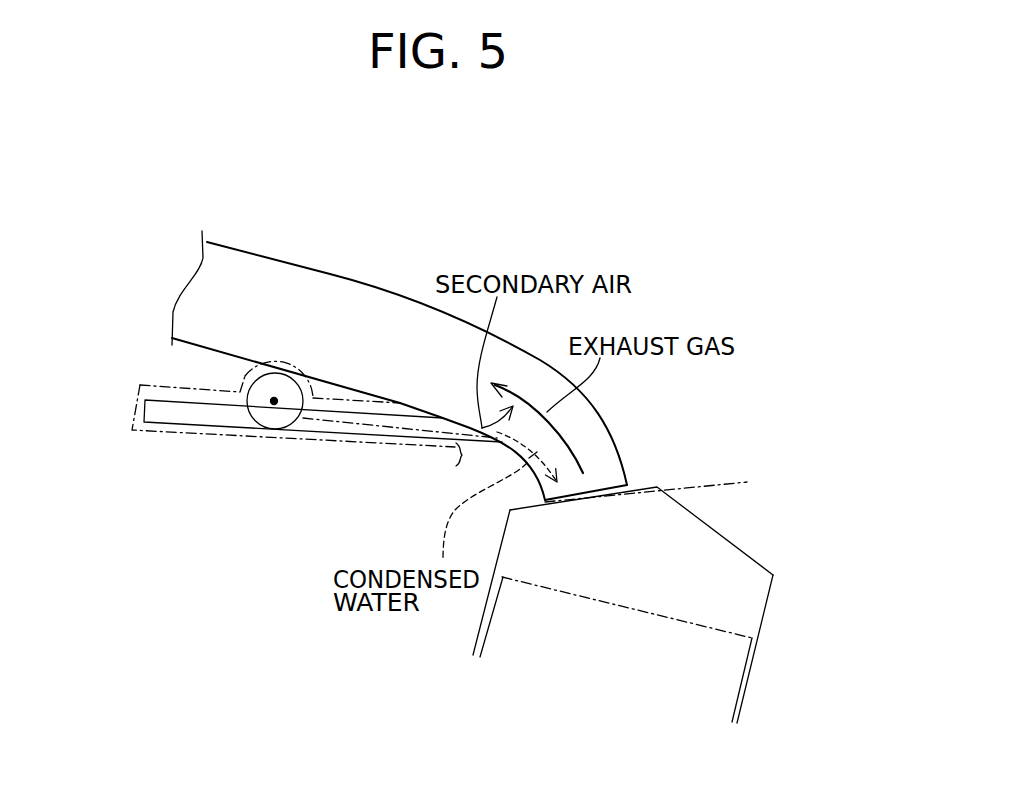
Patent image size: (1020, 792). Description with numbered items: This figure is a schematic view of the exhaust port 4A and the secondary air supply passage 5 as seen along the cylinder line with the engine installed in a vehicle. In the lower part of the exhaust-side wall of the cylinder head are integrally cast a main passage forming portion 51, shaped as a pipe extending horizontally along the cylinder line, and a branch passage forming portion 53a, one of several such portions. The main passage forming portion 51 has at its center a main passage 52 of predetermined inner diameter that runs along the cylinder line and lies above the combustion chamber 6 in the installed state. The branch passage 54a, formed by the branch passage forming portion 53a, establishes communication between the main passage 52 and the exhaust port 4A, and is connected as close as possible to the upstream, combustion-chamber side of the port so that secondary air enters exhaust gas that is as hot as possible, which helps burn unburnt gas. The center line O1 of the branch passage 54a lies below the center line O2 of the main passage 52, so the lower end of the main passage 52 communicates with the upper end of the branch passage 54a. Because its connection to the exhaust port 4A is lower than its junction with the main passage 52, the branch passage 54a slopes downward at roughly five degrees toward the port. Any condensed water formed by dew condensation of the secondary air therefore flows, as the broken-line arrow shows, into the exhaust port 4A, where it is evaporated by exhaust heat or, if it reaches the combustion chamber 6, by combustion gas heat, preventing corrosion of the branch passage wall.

The exhaust port 4A is at (398, 298).
The secondary air supply passage 5 is at (227, 448).
The main passage forming portion 51 is at (242, 375).
The main passage 52 is at (264, 418).
The branch passage forming portion 53a is at (193, 437).
The branch passage 54a is at (323, 437).
The branch-passage center line O1 is at (400, 427).
The center line of the main passage O2 is at (274, 400).
The combustion chamber 6 is at (652, 532).